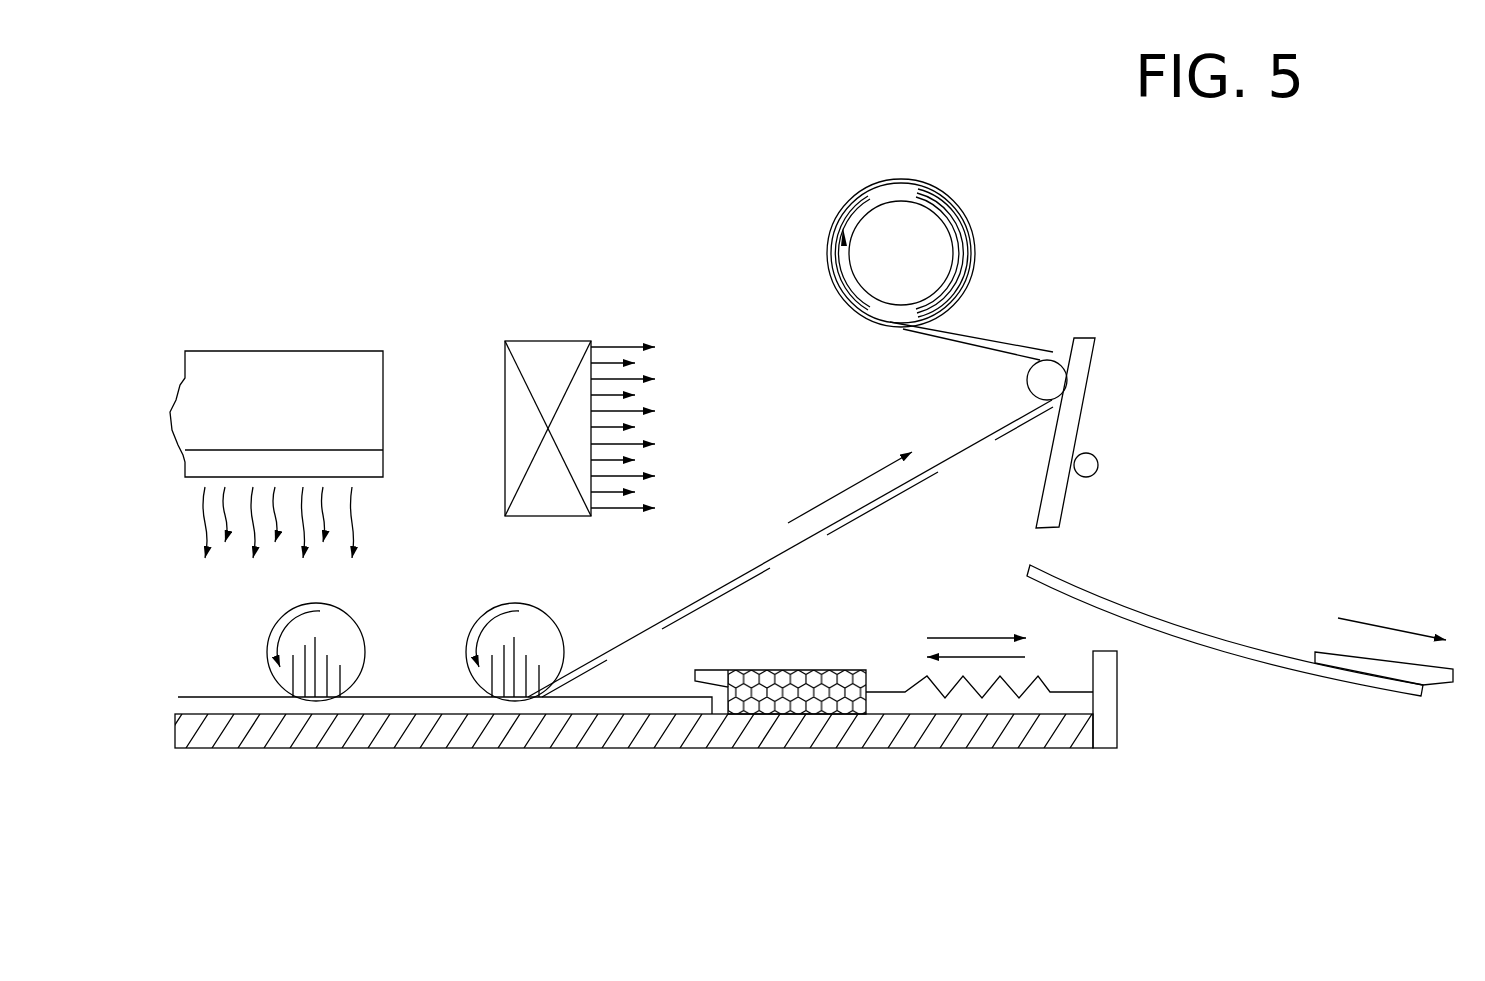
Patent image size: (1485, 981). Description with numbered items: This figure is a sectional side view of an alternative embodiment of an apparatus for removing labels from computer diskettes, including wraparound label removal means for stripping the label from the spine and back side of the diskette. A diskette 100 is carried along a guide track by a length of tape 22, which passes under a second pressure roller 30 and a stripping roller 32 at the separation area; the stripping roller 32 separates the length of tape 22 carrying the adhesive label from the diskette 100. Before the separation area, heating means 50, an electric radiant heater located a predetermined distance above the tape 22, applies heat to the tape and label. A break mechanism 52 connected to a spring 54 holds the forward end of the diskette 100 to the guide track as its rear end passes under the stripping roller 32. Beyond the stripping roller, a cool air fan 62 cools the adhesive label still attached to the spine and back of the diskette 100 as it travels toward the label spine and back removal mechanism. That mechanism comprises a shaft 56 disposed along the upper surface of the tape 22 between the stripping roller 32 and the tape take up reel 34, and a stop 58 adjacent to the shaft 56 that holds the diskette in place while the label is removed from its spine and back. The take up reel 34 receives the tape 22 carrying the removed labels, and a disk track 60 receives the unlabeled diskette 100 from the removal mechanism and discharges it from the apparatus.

The tape 22 is at (860, 467).
The second pressure roller 30 is at (281, 703).
The stripping roller 32 is at (487, 702).
The tape take up reel 34 is at (839, 253).
The heating means 50 is at (276, 402).
The break mechanism 52 is at (808, 737).
The spring 54 is at (1021, 721).
The shaft 56 is at (1111, 339).
The stop 58 is at (1150, 430).
The disk track 60 is at (1225, 578).
The cool air fan 62 is at (506, 401).
The diskette 100 is at (827, 564).